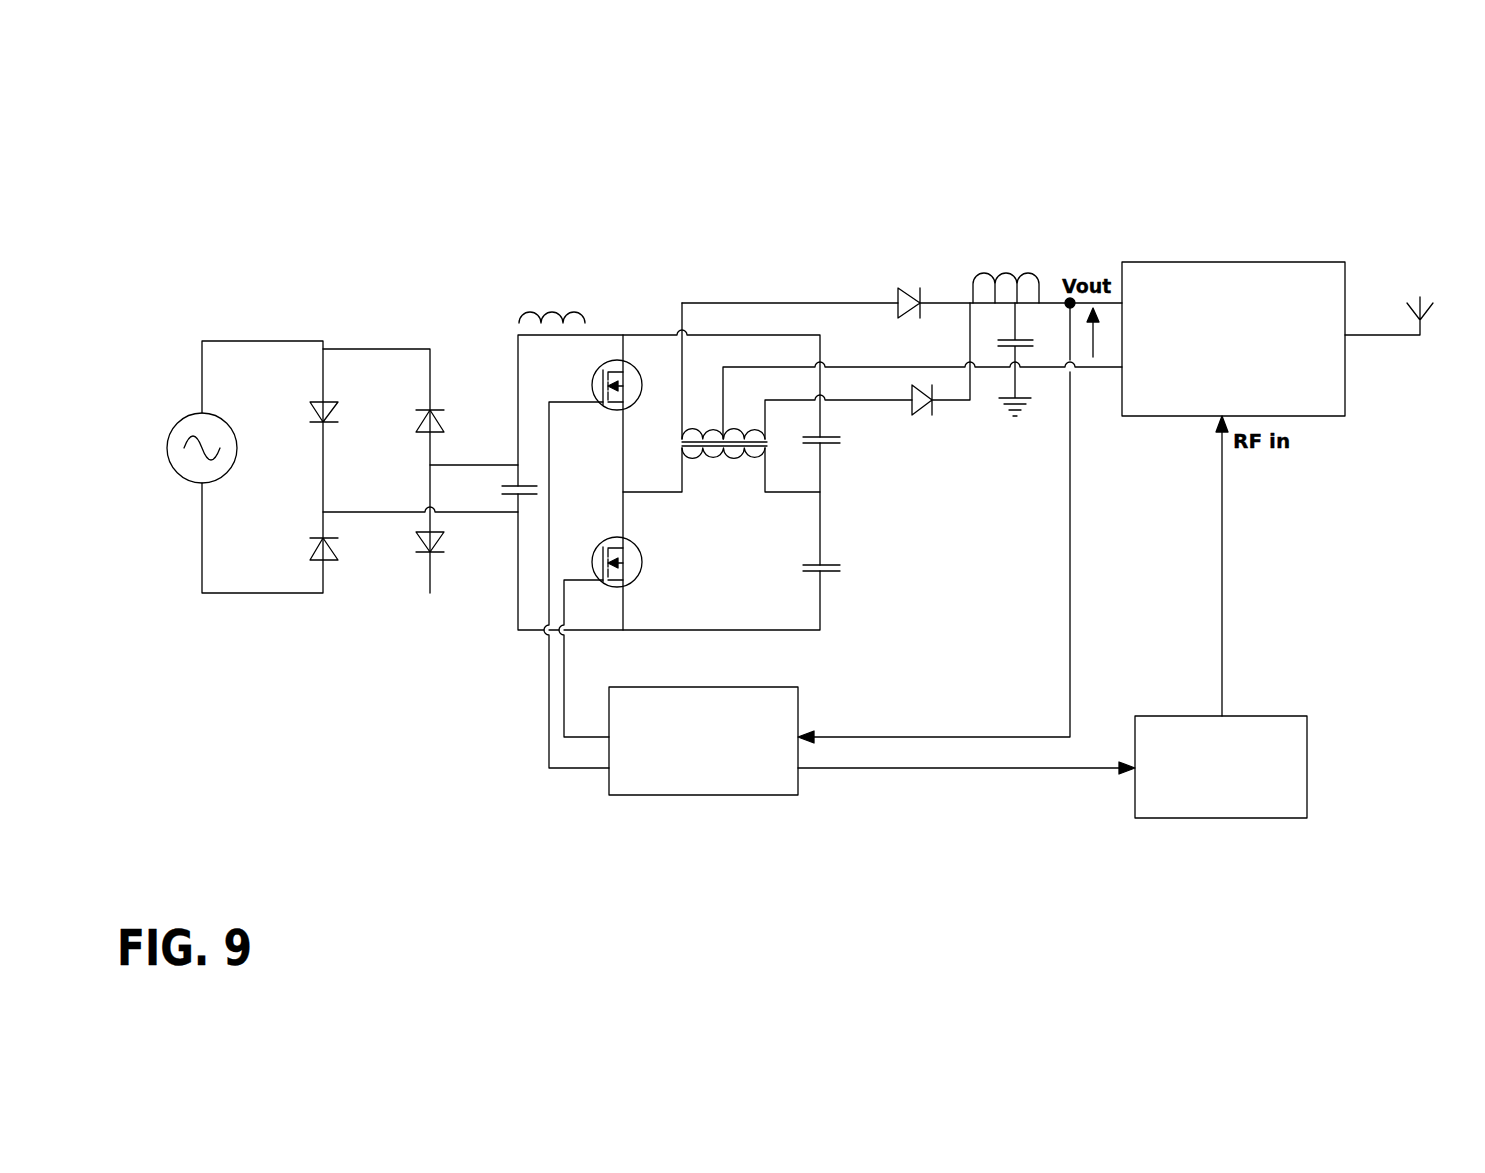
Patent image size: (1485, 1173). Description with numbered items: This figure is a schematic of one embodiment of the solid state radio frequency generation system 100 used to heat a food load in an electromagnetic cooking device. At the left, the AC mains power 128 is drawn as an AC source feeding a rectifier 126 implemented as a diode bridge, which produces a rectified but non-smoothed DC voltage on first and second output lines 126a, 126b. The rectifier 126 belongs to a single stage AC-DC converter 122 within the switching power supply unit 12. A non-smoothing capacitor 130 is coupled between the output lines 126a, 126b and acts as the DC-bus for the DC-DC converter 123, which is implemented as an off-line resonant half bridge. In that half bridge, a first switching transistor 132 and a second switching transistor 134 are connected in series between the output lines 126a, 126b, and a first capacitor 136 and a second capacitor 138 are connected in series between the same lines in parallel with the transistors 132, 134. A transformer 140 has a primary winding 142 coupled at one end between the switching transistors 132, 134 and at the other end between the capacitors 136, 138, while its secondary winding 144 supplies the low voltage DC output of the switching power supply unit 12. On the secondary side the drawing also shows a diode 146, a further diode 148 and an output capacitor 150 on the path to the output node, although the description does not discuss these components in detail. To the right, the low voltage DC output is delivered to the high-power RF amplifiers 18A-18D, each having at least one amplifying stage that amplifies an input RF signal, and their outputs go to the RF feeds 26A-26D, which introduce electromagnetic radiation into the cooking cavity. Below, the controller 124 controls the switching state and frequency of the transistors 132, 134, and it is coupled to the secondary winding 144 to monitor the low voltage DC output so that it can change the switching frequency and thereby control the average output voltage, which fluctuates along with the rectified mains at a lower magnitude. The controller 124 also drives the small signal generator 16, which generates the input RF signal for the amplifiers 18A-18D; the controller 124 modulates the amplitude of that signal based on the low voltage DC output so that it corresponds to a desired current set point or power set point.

The solid state radio frequency generation system 100 is at (683, 113).
The switching power supply unit 12 is at (870, 188).
The single stage AC-DC converter 122 is at (703, 227).
The DC-DC converter 123 is at (630, 280).
The controller 124 is at (642, 792).
The rectifier 126 is at (335, 303).
The first output line 126a is at (518, 382).
The second output line 126b is at (517, 592).
The AC mains power 128 is at (177, 423).
The non-smoothing capacitor 130 is at (495, 490).
The first switching transistor 132 is at (592, 388).
The second switching transistor 134 is at (642, 570).
The first capacitor 136 is at (842, 440).
The second capacitor 138 is at (842, 568).
The transformer 140 is at (707, 497).
The primary winding 142 is at (727, 453).
The secondary winding 144 is at (712, 427).
The diode 146 is at (907, 293).
The diode 148 is at (918, 417).
The output capacitor 150 is at (1033, 352).
The small signal generator 16 is at (1242, 818).
The high-power RF amplifiers 18A-18D is at (1245, 263).
The RF feeds 26A-26D is at (1373, 335).